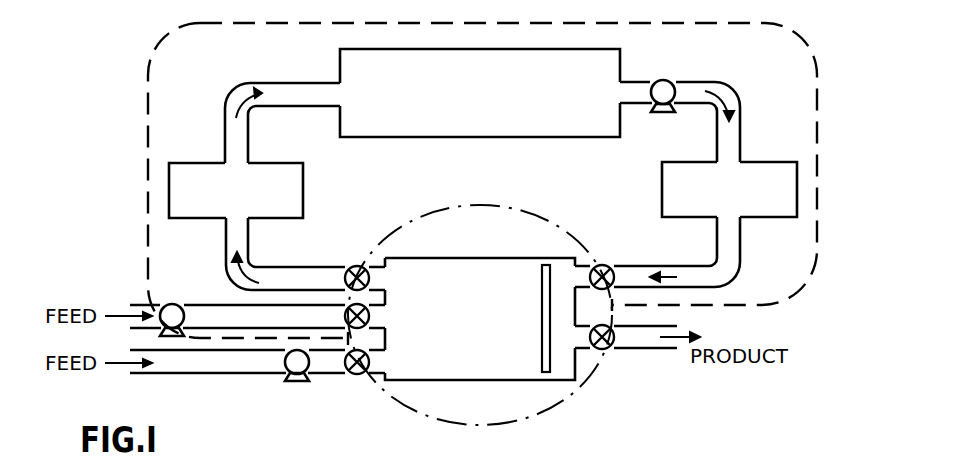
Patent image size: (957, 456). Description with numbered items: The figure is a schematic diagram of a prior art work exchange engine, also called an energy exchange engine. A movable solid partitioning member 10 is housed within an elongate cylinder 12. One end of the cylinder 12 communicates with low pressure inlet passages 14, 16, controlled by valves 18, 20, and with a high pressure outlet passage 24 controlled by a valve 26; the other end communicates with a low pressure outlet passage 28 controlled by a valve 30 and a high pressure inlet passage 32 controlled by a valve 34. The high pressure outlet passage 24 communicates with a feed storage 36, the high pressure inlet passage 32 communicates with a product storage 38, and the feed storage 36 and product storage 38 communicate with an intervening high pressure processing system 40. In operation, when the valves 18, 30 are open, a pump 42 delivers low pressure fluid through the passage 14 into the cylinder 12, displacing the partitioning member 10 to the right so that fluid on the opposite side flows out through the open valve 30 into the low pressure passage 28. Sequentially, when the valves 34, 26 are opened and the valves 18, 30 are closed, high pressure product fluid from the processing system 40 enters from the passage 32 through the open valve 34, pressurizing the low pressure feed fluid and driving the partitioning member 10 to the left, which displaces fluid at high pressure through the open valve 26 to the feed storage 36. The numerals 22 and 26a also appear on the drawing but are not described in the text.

The movable solid partitioning member 10 is at (542, 262).
The elongate cylinder 12 is at (425, 383).
The low pressure inlet passage 14 is at (220, 375).
The low pressure inlet passage 16 is at (200, 303).
The valve 18 is at (357, 376).
The valve 20 is at (372, 317).
The chamber 22 is at (511, 452).
The high pressure outlet passage 24 is at (290, 266).
The valve 26 is at (353, 264).
The chamber 26a is at (603, 452).
The low pressure outlet passage 28 is at (663, 350).
The valve 30 is at (606, 350).
The high pressure inlet passage 32 is at (645, 265).
The valve 34 is at (606, 263).
The feed storage 36 is at (197, 162).
The product storage 38 is at (766, 160).
The high pressure processing system 40 is at (622, 62).
The pump 42 is at (293, 383).